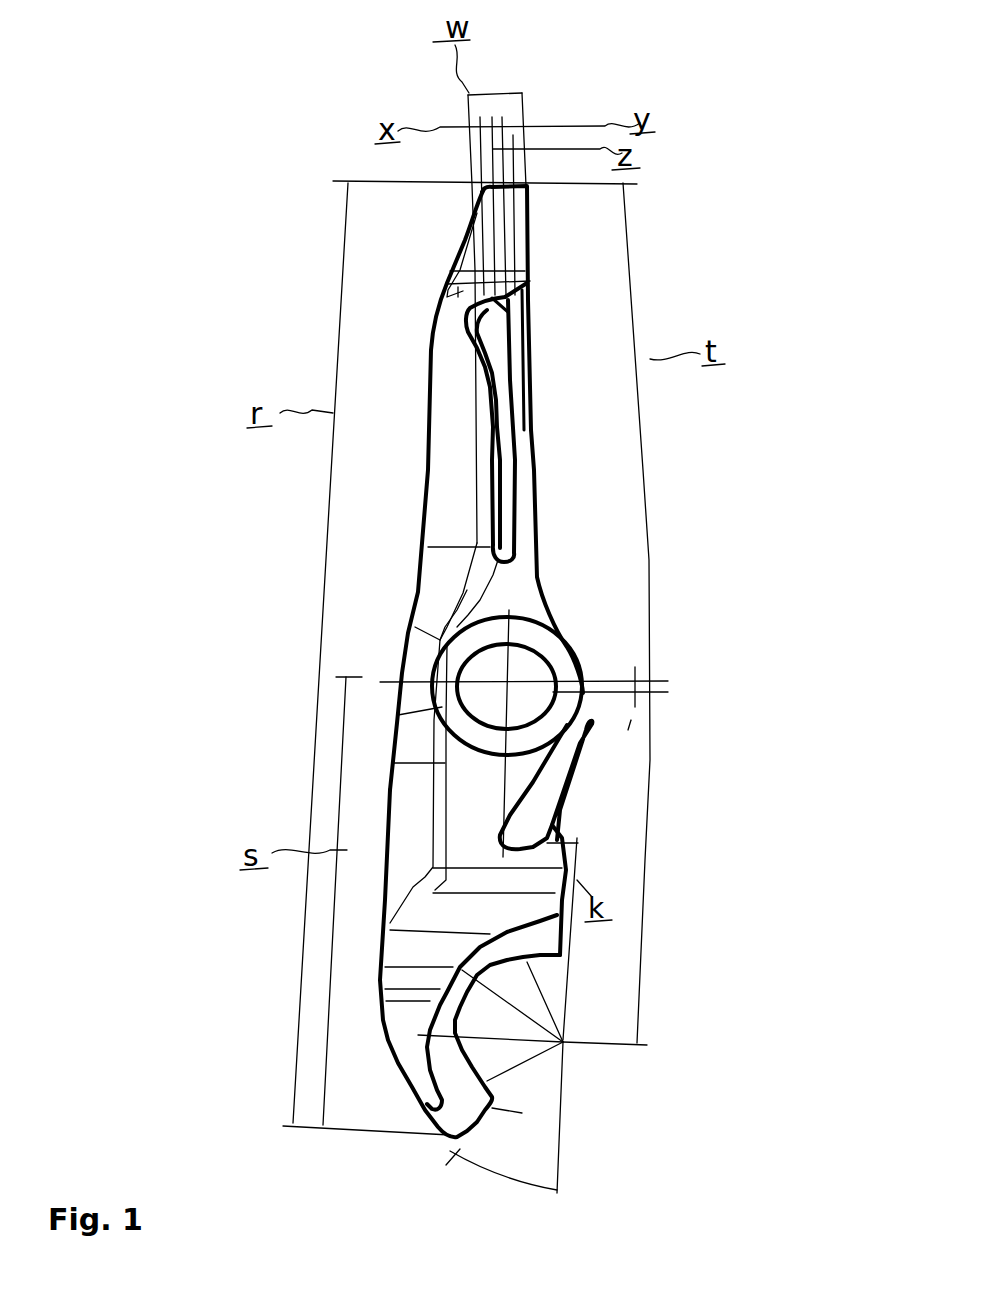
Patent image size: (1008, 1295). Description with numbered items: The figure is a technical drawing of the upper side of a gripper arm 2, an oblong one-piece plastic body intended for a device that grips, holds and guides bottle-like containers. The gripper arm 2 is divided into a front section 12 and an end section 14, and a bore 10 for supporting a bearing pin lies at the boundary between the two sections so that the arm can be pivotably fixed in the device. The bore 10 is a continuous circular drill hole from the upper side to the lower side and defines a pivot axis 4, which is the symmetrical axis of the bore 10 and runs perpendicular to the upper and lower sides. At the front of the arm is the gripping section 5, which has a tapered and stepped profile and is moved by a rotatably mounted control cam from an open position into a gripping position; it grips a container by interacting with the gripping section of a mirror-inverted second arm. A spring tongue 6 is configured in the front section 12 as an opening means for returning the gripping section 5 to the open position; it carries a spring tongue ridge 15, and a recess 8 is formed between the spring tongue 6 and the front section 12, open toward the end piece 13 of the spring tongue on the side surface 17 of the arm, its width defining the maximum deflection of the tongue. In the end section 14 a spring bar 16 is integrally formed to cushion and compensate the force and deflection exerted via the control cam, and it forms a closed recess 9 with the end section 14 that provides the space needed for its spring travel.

The gripper arm 2 is at (175, 92).
The pivot axis 4 is at (513, 680).
The gripping section 5 is at (545, 1065).
The spring tongue 6 is at (590, 797).
The recess for spring tongue 8 is at (533, 818).
The recess for spring bar 9 is at (532, 288).
The bore 10 is at (470, 697).
The front section 12 is at (240, 943).
The end piece of spring tongue 13 is at (593, 743).
The end section 14 is at (242, 467).
The spring tongue ridge 15 is at (580, 792).
The spring bar 16 is at (527, 427).
The side surface of gripper arm 17 is at (592, 712).